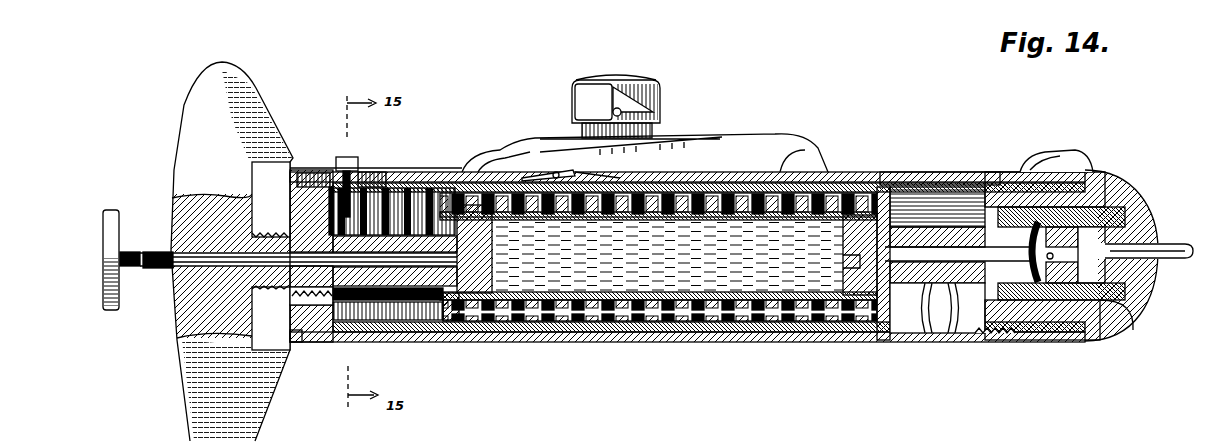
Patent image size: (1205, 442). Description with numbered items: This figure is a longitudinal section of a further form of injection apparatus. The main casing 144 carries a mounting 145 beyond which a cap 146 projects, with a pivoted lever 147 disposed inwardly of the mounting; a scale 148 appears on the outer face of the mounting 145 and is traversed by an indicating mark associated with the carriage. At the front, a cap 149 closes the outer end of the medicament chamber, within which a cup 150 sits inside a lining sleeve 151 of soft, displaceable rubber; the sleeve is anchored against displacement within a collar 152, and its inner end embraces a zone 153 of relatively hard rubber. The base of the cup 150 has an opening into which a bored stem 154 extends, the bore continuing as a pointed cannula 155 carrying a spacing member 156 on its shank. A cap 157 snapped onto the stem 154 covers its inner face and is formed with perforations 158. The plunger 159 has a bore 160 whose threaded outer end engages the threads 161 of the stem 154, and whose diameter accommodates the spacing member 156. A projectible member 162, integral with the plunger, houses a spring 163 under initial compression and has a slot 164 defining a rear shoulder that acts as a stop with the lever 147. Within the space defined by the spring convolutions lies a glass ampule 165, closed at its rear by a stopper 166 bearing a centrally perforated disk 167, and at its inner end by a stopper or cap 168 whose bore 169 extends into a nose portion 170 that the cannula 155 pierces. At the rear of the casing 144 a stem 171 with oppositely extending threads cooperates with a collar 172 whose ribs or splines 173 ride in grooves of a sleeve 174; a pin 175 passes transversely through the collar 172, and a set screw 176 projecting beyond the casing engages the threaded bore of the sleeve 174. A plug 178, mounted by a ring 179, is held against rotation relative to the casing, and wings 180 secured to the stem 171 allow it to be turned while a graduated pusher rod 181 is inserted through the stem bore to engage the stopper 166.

The main casing 144 is at (912, 172).
The mounting 145 is at (793, 147).
The cap 146 is at (656, 90).
The pivoted lever 147 is at (530, 170).
The scale 148 is at (645, 140).
The cap 149 is at (1125, 193).
The cup 150 is at (1042, 312).
The lining sleeve 151 is at (1108, 192).
The collar 152 is at (1073, 338).
The zone of relatively hard rubber 153 is at (1015, 173).
The bored stem 154 is at (1042, 261).
The cannula 155 is at (955, 333).
The spacing member 156 is at (928, 273).
The cap 157 is at (1040, 245).
The perforations 158 is at (1042, 276).
The plunger 159 is at (950, 333).
The bore 160 is at (907, 286).
The threads 161 is at (1000, 338).
The projectible member 162 is at (573, 328).
The spring 163 is at (647, 326).
The slot 164 is at (640, 165).
The ampule 165 is at (693, 292).
The stopper 166 is at (492, 266).
The centrally perforated disk 167 is at (458, 322).
The stopper or cap 168 is at (836, 277).
The bore 169 is at (836, 248).
The nose portion 170 is at (893, 332).
The stem 171 is at (257, 275).
The collar 172 is at (360, 330).
The ribs or splines 173 is at (340, 342).
The sleeve 174 is at (380, 178).
The pin 175 is at (397, 312).
The set screw 176 is at (355, 163).
The plug 178 is at (290, 318).
The ring 179 is at (330, 142).
The wings 180 is at (193, 423).
The graduated pusher rod 181 is at (121, 253).